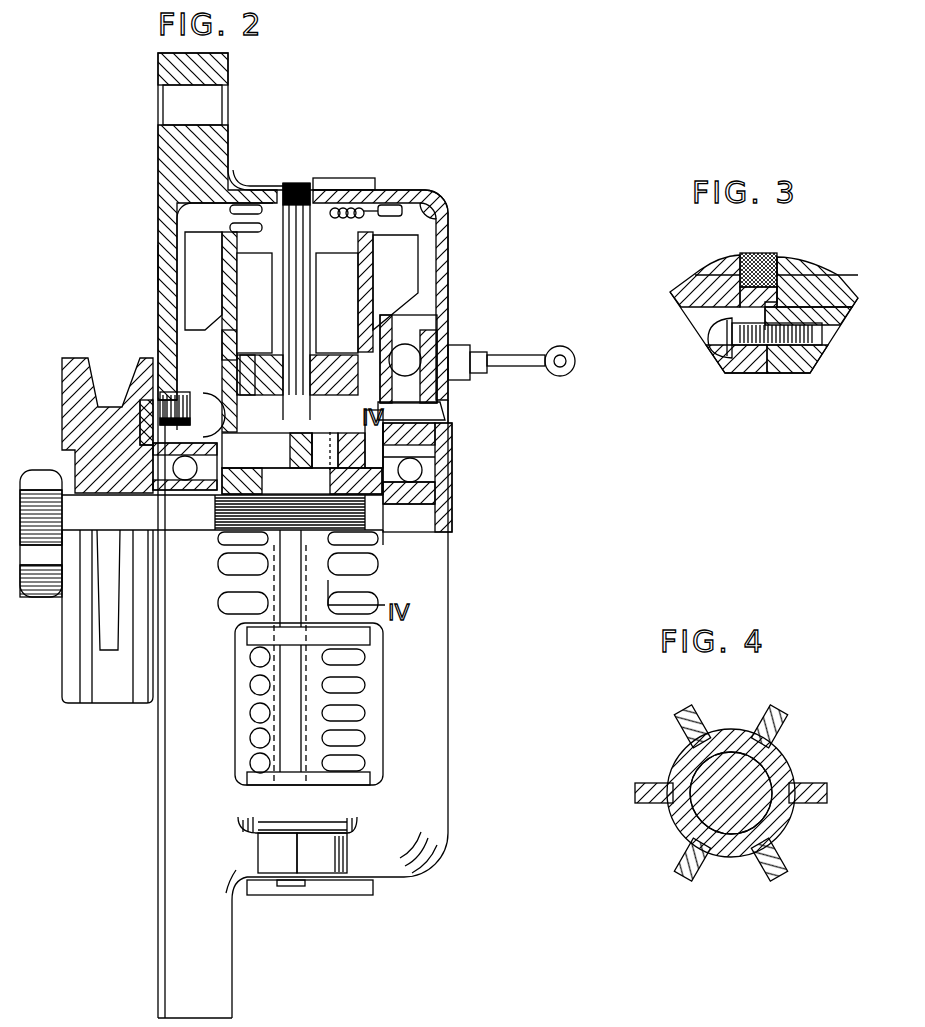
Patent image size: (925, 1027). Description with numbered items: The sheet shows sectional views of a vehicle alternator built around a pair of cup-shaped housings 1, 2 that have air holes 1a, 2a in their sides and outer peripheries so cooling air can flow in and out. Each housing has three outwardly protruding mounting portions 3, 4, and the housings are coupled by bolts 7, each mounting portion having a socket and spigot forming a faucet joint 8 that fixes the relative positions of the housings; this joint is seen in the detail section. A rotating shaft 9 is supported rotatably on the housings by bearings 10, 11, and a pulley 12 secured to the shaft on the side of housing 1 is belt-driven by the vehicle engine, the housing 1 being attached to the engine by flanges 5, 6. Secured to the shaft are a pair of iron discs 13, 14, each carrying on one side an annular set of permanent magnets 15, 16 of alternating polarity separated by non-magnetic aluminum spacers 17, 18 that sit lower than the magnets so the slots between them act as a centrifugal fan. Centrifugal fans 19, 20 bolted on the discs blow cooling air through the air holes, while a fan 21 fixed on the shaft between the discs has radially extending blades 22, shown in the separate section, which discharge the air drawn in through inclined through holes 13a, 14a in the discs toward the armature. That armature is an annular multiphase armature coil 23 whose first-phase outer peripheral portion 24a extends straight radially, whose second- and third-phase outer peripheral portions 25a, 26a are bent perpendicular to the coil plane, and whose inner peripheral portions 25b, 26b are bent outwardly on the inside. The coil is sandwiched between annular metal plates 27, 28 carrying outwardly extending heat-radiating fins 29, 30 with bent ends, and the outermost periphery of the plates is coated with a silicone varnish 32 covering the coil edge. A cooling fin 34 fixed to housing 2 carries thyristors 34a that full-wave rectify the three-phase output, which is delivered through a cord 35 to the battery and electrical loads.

In FIG. 2, the housing 1 is at (165, 166).
In FIG. 3, the housing 1 is at (690, 285).
In FIG. 2, the air holes 1a is at (165, 328).
In FIG. 2, the housing 2 is at (418, 202).
In FIG. 3, the housing 2 is at (818, 280).
In FIG. 2, the air holes 2a is at (396, 197).
In FIG. 2, the mounting portion 3 is at (263, 858).
In FIG. 3, the mounting portion 3 is at (740, 374).
In FIG. 2, the mounting portion 4 is at (340, 855).
In FIG. 3, the mounting portion 4 is at (793, 374).
In FIG. 2, the flange 5 is at (222, 72).
In FIG. 2, the flange 6 is at (228, 992).
In FIG. 3, the bolt 7 is at (715, 353).
In FIG. 3, the faucet joint 8 is at (825, 332).
In FIG. 2, the rotating shaft 9 is at (82, 490).
In FIG. 4, the rotating shaft 9 is at (727, 760).
In FIG. 2, the bearing 10 is at (150, 450).
In FIG. 2, the bearing 11 is at (452, 467).
In FIG. 2, the pulley 12 is at (62, 648).
In FIG. 2, the disc 13 is at (222, 348).
In FIG. 2, the through hole 13a is at (302, 481).
In FIG. 2, the disc 14 is at (338, 450).
In FIG. 2, the through hole 14a is at (370, 460).
In FIG. 2, the permanent magnets 15 is at (222, 247).
In FIG. 2, the permanent magnets 16 is at (400, 271).
In FIG. 2, the spacer 17 is at (226, 370).
In FIG. 2, the spacer 18 is at (432, 336).
In FIG. 2, the centrifugal fan 19 is at (160, 265).
In FIG. 2, the centrifugal fan 20 is at (405, 256).
In FIG. 2, the fan 21 is at (215, 502).
In FIG. 4, the fan 21 is at (778, 760).
In FIG. 4, the blades 22 is at (770, 720).
In FIG. 2, the armature coil 23 is at (428, 228).
In FIG. 3, the armature coil 23 is at (758, 255).
In FIG. 2, the outer peripheral portion 24a is at (291, 183).
In FIG. 2, the outer peripheral portion 25a is at (245, 205).
In FIG. 2, the inner peripheral portion 25b is at (267, 450).
In FIG. 2, the outer peripheral portion 26a is at (343, 207).
In FIG. 2, the inner peripheral portion 26b is at (428, 405).
In FIG. 2, the annular metal plate 27 is at (290, 329).
In FIG. 3, the annular metal plate 27 is at (742, 262).
In FIG. 2, the annular metal plate 28 is at (300, 329).
In FIG. 3, the annular metal plate 28 is at (785, 257).
In FIG. 2, the heat-radiating fins 29 is at (248, 185).
In FIG. 2, the heat-radiating fins 30 is at (368, 178).
In FIG. 2, the silicone varnish 32 is at (300, 183).
In FIG. 2, the cooling fin 34 is at (420, 315).
In FIG. 2, the thyristor 34a is at (412, 368).
In FIG. 2, the cord 35 is at (505, 357).